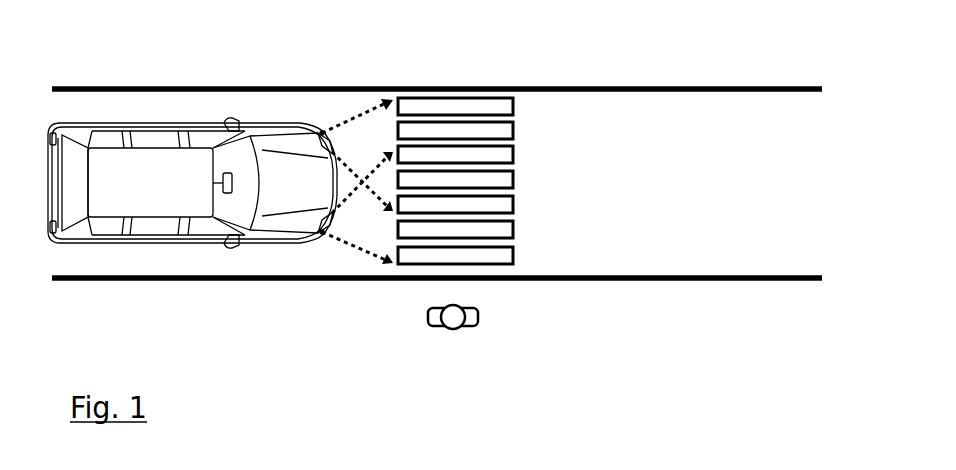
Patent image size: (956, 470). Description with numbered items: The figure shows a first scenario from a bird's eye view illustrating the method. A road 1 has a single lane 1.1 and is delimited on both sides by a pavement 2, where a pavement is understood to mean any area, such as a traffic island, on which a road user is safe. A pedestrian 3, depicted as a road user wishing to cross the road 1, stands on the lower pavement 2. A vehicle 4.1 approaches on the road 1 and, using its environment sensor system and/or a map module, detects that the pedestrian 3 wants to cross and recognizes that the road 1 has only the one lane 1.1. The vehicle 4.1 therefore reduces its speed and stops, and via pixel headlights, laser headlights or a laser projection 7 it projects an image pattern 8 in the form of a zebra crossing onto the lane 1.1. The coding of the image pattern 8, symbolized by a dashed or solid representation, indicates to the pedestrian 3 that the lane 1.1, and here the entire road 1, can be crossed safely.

The road 1 is at (717, 103).
The lane 1.1 is at (812, 253).
The pavement 2 is at (594, 64).
The pedestrian 3 is at (472, 320).
The vehicle 4.1 is at (187, 170).
The laser projection 7 is at (322, 133).
The image pattern 8 is at (450, 187).